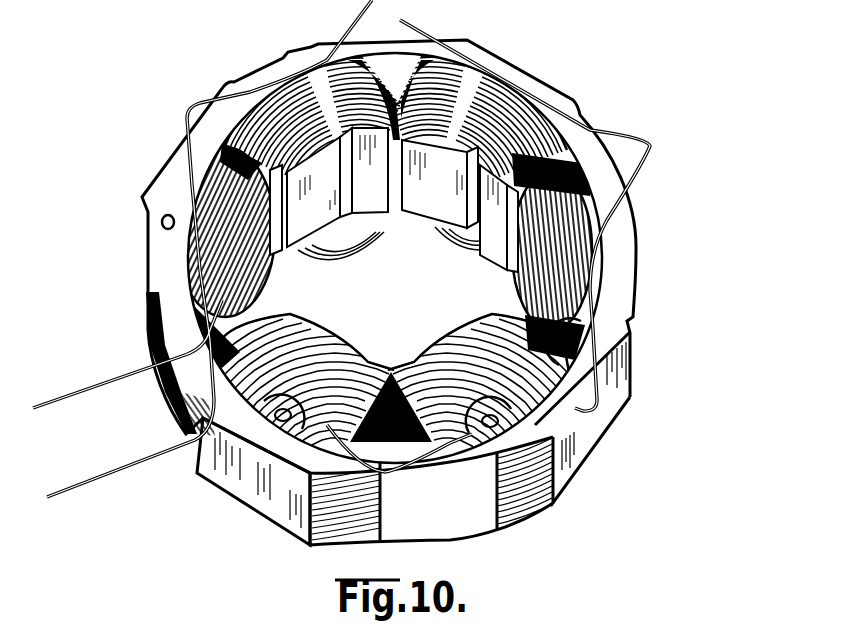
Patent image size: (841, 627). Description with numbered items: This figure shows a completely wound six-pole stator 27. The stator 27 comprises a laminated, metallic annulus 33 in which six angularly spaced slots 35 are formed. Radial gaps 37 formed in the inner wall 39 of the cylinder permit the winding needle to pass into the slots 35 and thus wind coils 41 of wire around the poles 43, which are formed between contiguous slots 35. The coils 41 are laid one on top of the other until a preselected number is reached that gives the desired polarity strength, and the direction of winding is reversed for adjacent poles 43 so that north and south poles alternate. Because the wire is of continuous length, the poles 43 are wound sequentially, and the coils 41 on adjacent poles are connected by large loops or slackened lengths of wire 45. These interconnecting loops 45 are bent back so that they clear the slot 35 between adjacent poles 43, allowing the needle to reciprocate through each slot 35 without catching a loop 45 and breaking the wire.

The stator 27 is at (592, 440).
The laminated, metallic annulus 33 is at (297, 463).
The slots 35 is at (405, 68).
The radial gaps 37 is at (260, 312).
The inner wall 39 is at (436, 244).
The coils 41 is at (277, 87).
The poles 43 is at (360, 240).
The loops 45 is at (187, 105).